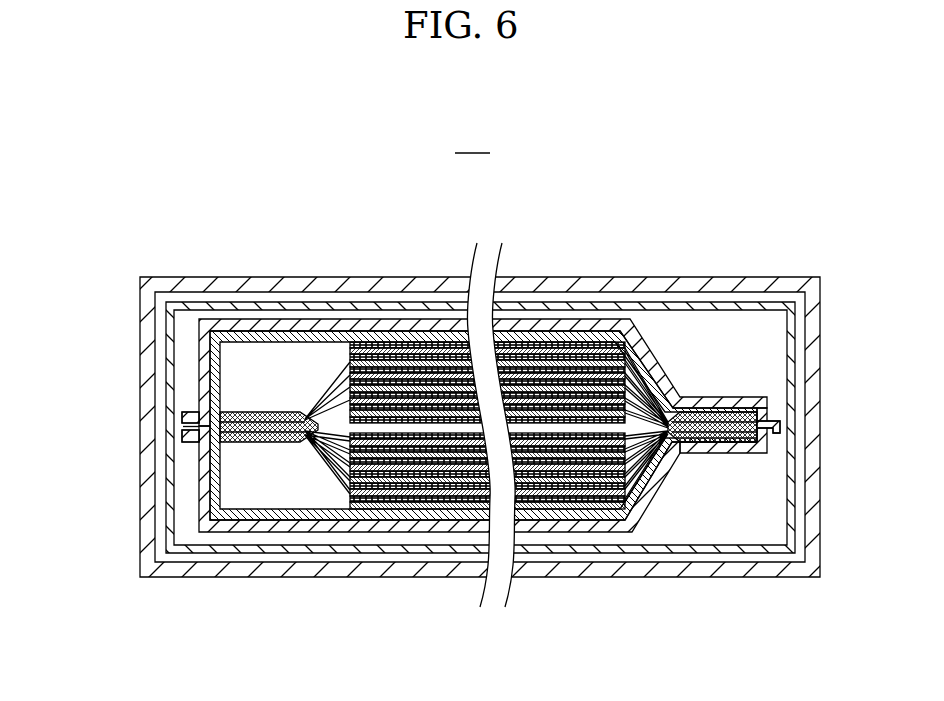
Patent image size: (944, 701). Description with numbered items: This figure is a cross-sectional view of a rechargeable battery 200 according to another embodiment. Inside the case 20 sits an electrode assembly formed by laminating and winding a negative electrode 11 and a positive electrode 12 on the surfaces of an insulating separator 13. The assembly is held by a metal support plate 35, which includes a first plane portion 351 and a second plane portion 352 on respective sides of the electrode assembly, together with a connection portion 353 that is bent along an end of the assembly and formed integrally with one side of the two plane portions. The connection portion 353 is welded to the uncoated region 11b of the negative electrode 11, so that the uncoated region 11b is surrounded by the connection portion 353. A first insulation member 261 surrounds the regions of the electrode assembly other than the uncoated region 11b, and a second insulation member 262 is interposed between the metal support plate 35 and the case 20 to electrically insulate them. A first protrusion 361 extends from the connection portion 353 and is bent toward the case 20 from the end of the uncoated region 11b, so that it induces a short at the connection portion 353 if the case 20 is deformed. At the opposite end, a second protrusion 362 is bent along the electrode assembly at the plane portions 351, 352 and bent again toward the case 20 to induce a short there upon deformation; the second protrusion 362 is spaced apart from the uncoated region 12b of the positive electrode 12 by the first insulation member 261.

The rechargeable battery 200 is at (472, 142).
The case 20 is at (665, 287).
The second insulation member 262 is at (185, 553).
The first insulation member 261 is at (300, 520).
The metal support plate 35 is at (483, 441).
The first plane portion 351 is at (363, 532).
The second plane portion 352 is at (297, 319).
The connection portion 353 is at (705, 447).
The negative electrode 11 is at (605, 503).
The positive electrode 12 is at (533, 493).
The separator 13 is at (570, 497).
The uncoated region of the negative electrode 11b is at (727, 443).
The uncoated region of the positive electrode 12b is at (249, 443).
The first protrusion 361 is at (772, 421).
The second protrusion 362 is at (181, 437).